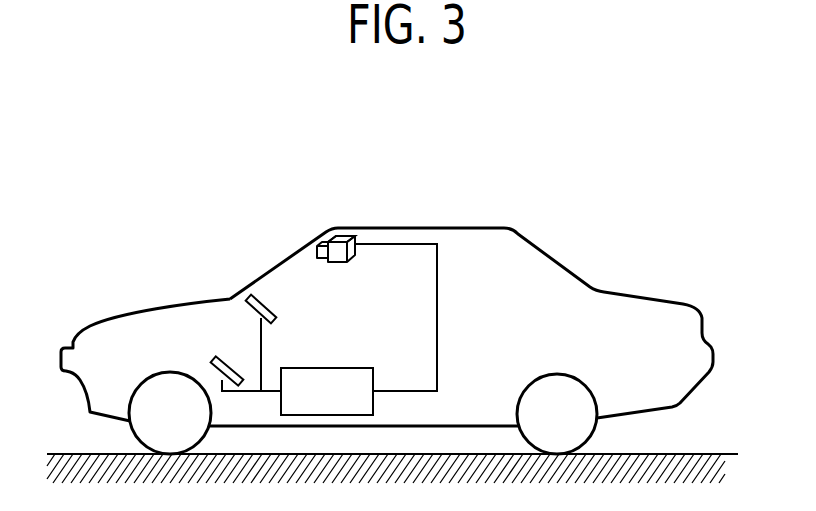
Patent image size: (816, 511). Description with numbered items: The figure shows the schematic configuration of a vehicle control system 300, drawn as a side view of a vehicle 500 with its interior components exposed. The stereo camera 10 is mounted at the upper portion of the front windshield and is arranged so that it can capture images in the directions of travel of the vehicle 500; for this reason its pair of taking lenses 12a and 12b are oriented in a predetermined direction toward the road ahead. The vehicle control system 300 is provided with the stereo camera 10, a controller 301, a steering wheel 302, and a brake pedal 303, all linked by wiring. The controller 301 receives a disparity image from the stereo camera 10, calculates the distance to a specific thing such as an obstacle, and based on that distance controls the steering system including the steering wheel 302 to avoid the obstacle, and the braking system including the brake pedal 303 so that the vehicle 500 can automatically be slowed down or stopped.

The stereo camera 10 is at (329, 255).
The taking lens 12a is at (331, 240).
The taking lens 12b is at (317, 250).
The vehicle control system 300 is at (487, 285).
The controller 301 is at (329, 368).
The steering wheel 302 is at (262, 297).
The brake pedal 303 is at (226, 358).
The vehicle 500 is at (471, 228).